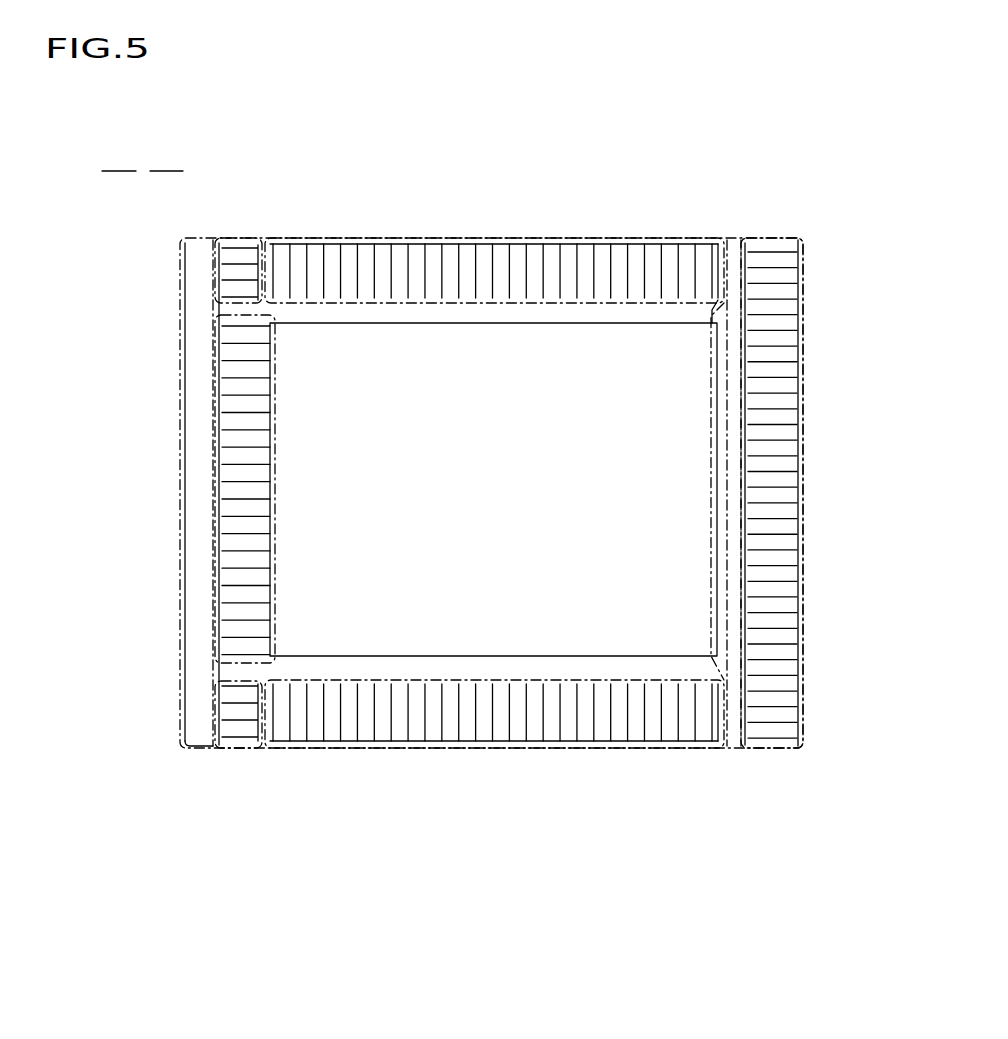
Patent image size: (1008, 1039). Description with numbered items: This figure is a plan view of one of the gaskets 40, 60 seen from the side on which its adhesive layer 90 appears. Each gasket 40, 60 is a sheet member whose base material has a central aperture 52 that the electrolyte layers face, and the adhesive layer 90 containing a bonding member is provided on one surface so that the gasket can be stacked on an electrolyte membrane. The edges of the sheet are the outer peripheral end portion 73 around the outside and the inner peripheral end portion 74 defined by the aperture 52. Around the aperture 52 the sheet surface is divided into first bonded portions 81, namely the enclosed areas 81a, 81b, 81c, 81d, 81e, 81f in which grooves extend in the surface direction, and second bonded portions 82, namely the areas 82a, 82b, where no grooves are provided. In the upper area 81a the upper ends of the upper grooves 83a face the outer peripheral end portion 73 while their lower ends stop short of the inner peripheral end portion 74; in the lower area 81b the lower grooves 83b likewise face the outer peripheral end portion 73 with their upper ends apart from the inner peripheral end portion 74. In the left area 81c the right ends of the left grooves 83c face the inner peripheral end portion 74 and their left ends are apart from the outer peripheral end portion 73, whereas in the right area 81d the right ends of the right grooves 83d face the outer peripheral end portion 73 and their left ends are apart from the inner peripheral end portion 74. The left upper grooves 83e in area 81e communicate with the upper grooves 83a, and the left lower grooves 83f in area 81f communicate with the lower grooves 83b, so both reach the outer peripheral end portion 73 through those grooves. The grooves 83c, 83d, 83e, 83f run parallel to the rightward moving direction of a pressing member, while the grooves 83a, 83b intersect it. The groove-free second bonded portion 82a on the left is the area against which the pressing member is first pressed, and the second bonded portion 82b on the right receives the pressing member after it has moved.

The gasket 40 is at (485, 498).
The gasket 60 is at (491, 498).
The aperture 52 is at (569, 475).
The outer peripheral end portion 73 is at (547, 243).
The inner peripheral end portion 74 is at (545, 325).
The first bonded portion 81 is at (507, 498).
The first bonded portion 81a is at (494, 421).
The first bonded portion 81b is at (494, 759).
The first bonded portion 81c is at (294, 489).
The first bonded portion 81d is at (728, 493).
The first bonded portion 81e is at (252, 233).
The first bonded portion 81f is at (249, 760).
The second bonded portion 82 is at (491, 546).
The second bonded portion 82a is at (198, 750).
The second bonded portion 82b is at (748, 752).
The upper groove 83a is at (360, 272).
The lower groove 83b is at (376, 720).
The left groove 83c is at (257, 552).
The right groove 83d is at (770, 548).
The left upper groove 83e is at (244, 262).
The left lower groove 83f is at (240, 722).
The adhesive layer 90 is at (735, 262).